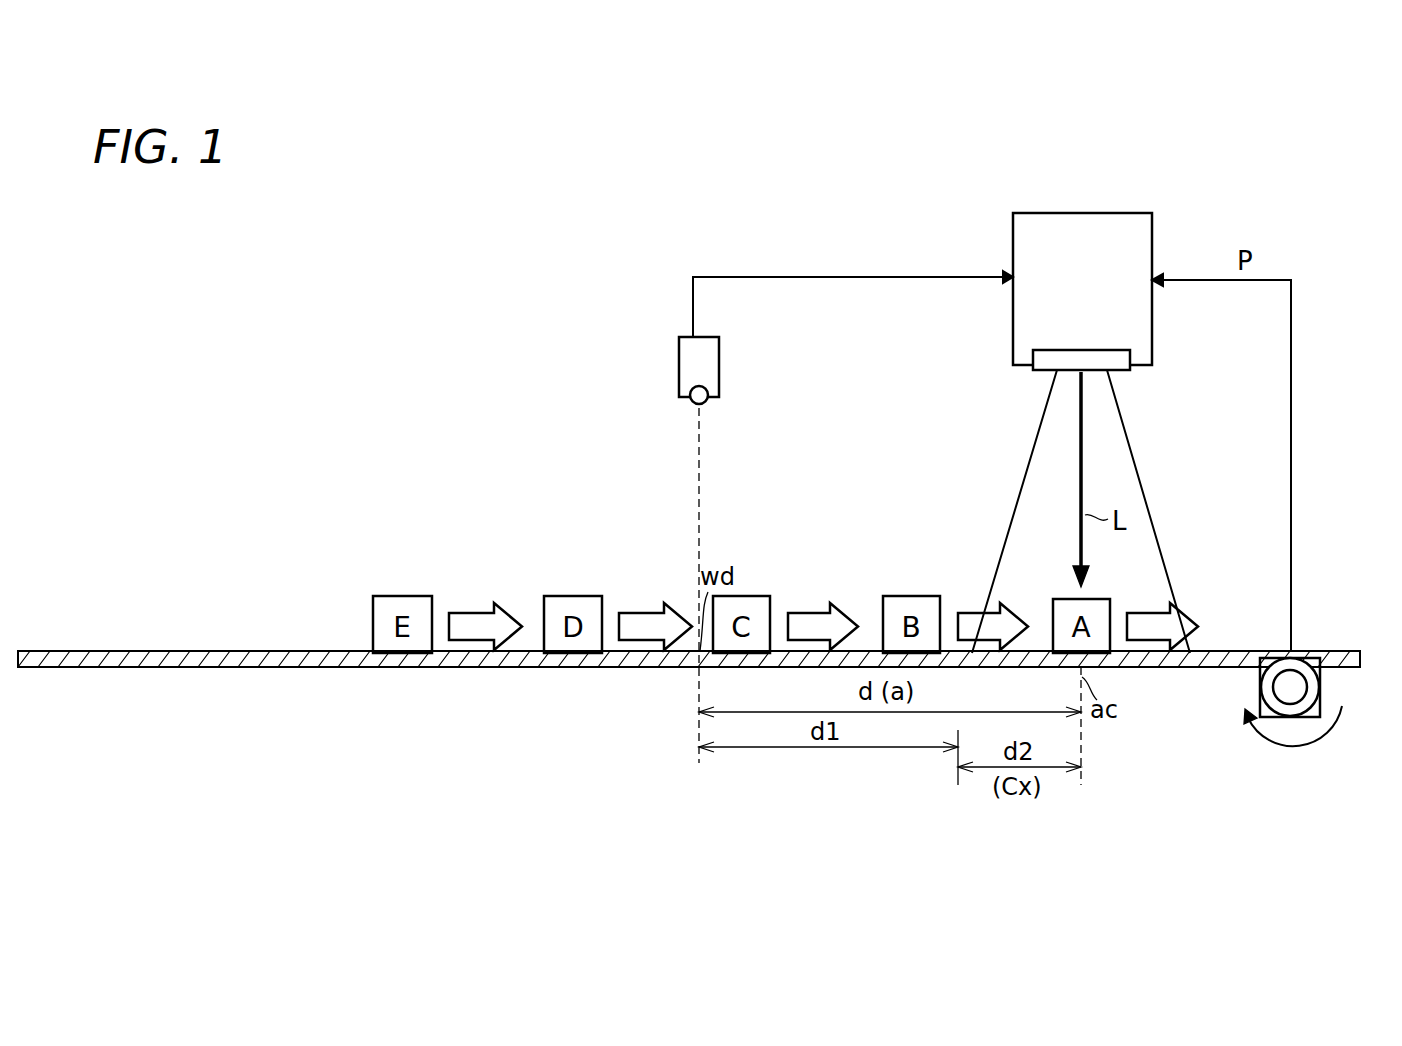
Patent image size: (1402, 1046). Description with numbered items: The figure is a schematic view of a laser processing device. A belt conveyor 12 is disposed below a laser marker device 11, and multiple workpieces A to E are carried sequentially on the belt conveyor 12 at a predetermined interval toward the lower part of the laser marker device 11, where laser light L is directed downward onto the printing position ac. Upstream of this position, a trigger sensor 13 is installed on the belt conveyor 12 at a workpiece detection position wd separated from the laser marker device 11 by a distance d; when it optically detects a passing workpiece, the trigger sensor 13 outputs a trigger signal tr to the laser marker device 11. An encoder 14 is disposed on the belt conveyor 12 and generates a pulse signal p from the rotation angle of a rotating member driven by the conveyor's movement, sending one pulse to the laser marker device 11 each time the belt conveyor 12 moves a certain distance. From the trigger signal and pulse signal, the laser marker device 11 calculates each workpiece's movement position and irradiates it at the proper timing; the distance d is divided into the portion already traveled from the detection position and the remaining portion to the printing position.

The laser marker device 11 is at (1152, 231).
The belt conveyor 12 is at (250, 651).
The trigger sensor 13 is at (678, 366).
The encoder 14 is at (1320, 690).